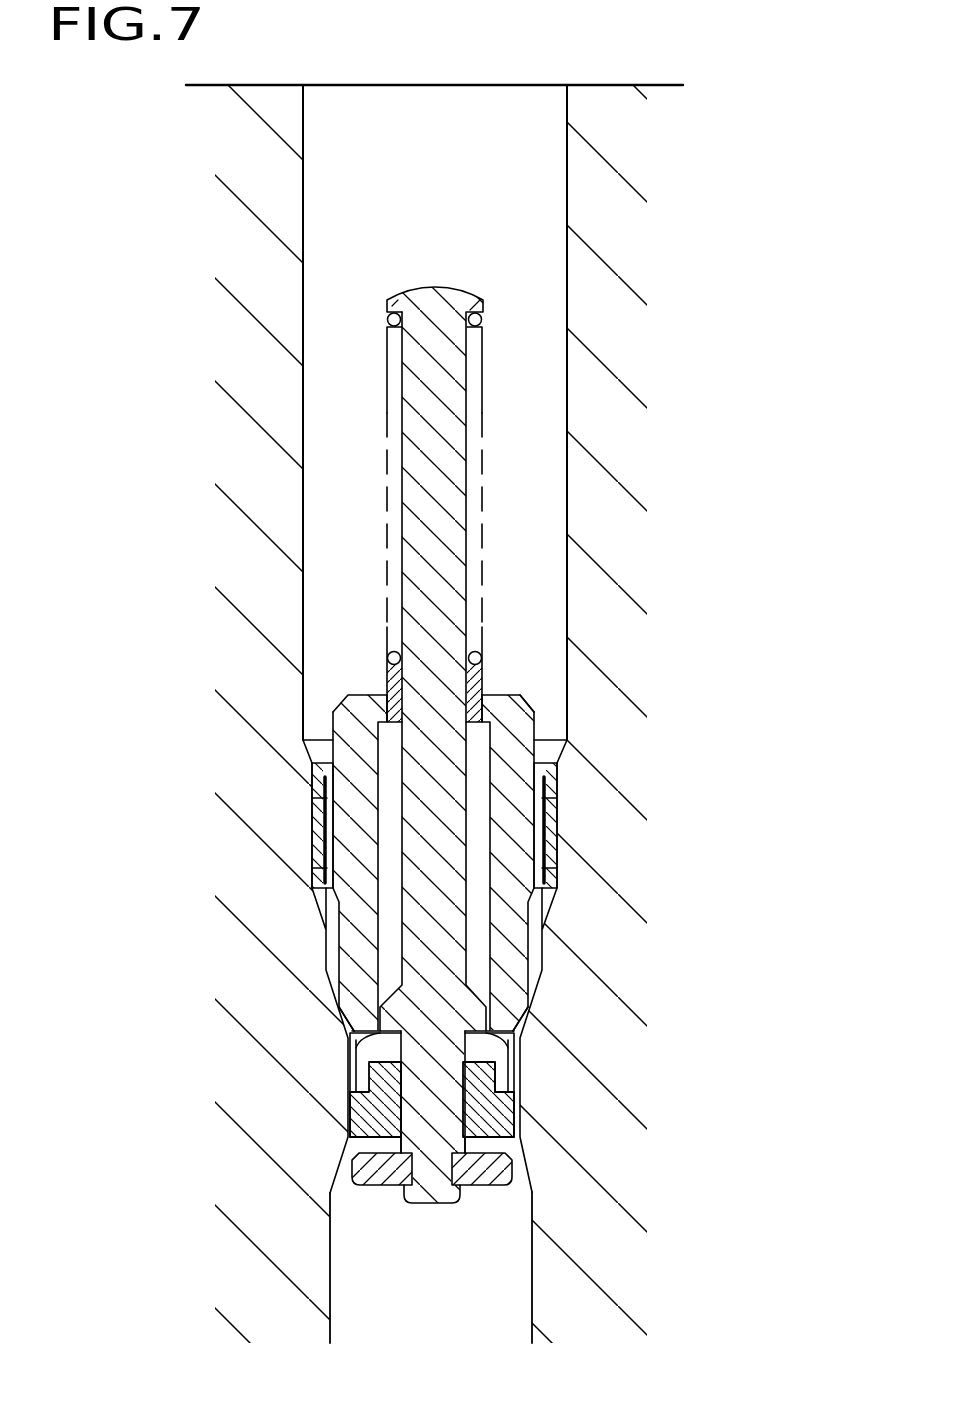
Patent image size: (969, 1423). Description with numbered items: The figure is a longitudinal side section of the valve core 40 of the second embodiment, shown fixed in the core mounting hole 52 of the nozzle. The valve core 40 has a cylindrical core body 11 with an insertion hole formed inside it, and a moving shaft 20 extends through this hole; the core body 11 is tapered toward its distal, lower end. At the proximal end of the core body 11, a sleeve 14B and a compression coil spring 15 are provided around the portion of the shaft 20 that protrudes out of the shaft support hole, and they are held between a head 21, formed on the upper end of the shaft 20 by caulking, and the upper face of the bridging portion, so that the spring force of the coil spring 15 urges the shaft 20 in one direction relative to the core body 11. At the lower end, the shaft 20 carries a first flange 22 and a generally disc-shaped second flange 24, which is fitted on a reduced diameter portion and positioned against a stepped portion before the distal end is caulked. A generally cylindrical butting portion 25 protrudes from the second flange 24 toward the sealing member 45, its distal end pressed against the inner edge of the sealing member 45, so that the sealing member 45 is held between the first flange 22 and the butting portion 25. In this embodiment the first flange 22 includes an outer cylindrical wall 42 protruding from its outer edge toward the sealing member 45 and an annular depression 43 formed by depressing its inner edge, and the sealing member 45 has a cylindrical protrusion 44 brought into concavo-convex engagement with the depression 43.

The core body 11 is at (334, 697).
The sleeve 14B is at (480, 655).
The compression coil spring 15 is at (483, 320).
The moving shaft 20 is at (412, 840).
The head 21 is at (452, 298).
The first flange 22 is at (520, 1010).
The second flange 24 is at (353, 1165).
The butting portion 25 is at (383, 1147).
The valve core 40 is at (535, 697).
The outer cylindrical wall 42 is at (503, 1077).
The annular depression 43 is at (494, 1060).
The cylindrical protrusion 44 is at (350, 1050).
The sealing member 45 is at (336, 1104).
The core mounting hole 52 is at (530, 1243).